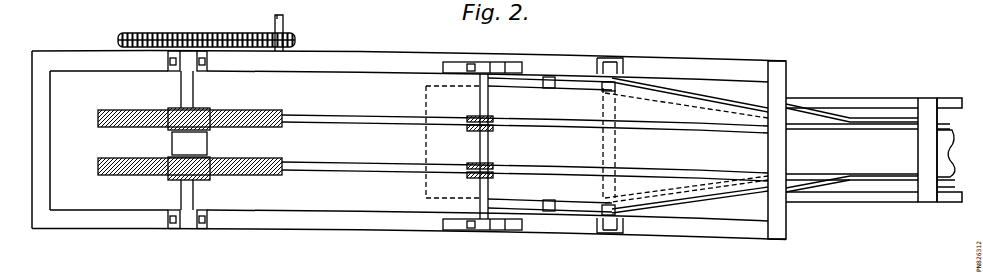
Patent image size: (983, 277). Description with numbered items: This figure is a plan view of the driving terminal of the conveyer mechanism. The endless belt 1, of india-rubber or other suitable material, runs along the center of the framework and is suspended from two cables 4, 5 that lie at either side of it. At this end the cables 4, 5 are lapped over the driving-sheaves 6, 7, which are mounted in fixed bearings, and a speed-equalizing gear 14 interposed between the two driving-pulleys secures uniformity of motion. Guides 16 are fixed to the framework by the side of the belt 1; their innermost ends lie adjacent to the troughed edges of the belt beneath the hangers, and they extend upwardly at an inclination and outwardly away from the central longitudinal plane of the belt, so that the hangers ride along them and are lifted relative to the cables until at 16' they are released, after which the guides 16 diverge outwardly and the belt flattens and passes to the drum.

The endless belt 1 is at (420, 145).
The cable 4 is at (616, 115).
The cable 5 is at (618, 166).
The driving-sheave 6 is at (284, 118).
The driving-sheave 7 is at (284, 165).
The speed-equalizing gear 14 is at (206, 143).
The guides 16 is at (703, 148).
The release point of guides 16' is at (852, 200).